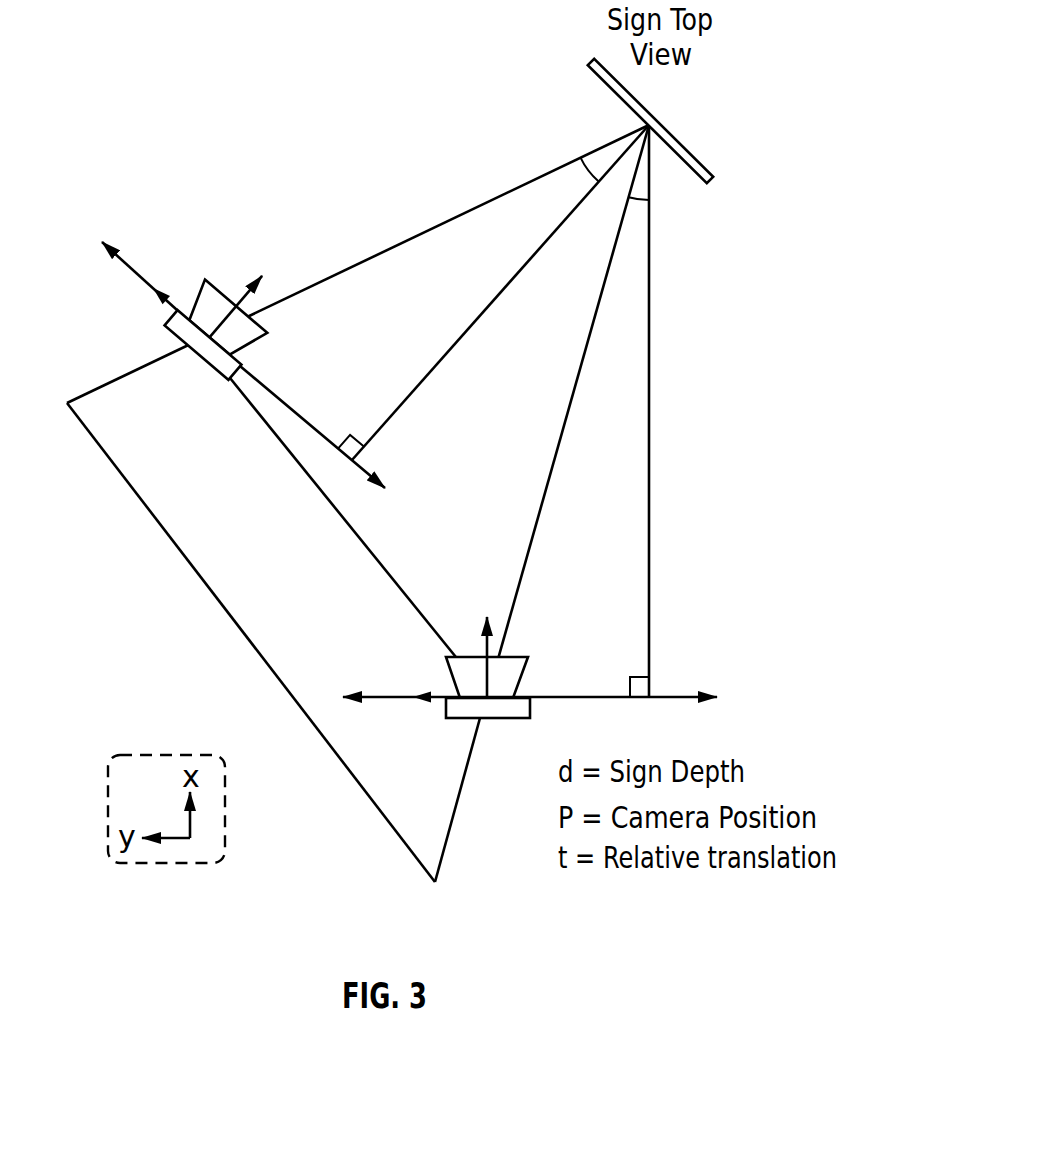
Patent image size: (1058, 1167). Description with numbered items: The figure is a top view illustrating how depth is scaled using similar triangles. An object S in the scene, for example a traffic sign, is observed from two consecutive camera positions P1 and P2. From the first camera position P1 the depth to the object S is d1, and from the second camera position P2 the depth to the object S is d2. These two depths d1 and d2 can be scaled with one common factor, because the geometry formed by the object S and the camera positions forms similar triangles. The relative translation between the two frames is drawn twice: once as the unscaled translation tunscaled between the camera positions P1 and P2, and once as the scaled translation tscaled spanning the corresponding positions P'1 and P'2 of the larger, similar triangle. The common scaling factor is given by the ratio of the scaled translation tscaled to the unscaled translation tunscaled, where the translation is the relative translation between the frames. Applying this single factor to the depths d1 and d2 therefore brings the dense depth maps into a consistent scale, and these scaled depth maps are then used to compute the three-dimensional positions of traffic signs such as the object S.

The object S is at (552, 80).
The camera position P1 is at (530, 693).
The camera position P2 is at (243, 365).
The scaled first camera position P'1 is at (451, 822).
The scaled second camera position P'2 is at (340, 283).
The depth d1 is at (647, 411).
The depth d2 is at (493, 292).
The unscaled relative translation tunscaled is at (349, 525).
The scaled relative translation tscaled is at (251, 642).